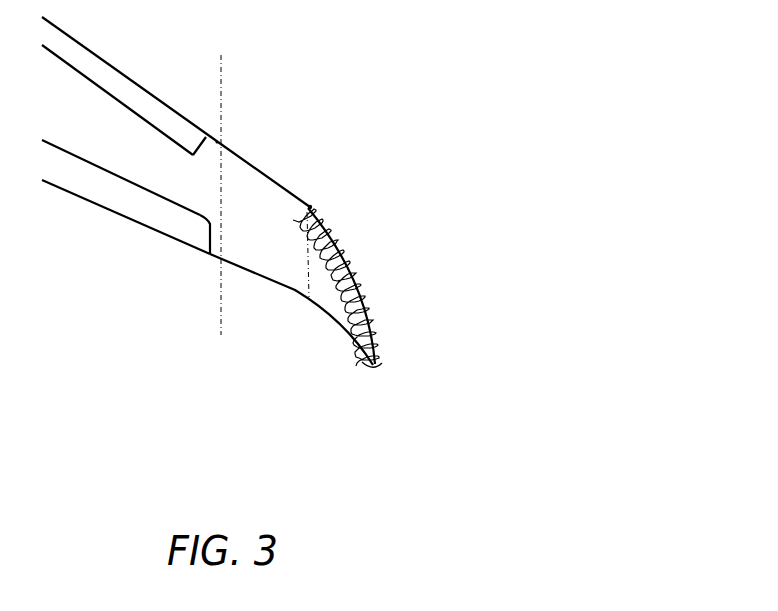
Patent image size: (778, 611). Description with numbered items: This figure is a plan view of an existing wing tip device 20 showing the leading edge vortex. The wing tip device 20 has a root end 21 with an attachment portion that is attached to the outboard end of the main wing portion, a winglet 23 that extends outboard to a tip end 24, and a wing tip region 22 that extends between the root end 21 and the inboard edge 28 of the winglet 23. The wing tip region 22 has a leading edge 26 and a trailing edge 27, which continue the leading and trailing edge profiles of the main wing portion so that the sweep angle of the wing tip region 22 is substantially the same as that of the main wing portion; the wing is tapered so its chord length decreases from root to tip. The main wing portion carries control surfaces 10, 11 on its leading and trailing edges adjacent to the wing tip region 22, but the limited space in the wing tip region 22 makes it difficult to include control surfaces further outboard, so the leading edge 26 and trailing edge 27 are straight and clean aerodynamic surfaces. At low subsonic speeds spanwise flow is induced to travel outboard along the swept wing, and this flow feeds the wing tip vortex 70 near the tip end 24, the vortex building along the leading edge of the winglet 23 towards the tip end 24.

The control surface 10 is at (123, 88).
The control surface 11 is at (110, 193).
The wing tip device 20 is at (347, 155).
The root end 21 is at (217, 142).
The wing tip region 22 is at (232, 188).
The winglet 23 is at (322, 288).
The tip end 24 is at (376, 362).
The leading edge 26 is at (277, 185).
The trailing edge 27 is at (259, 277).
The inboard edge 28 is at (309, 297).
The wing tip vortex 70 is at (309, 205).